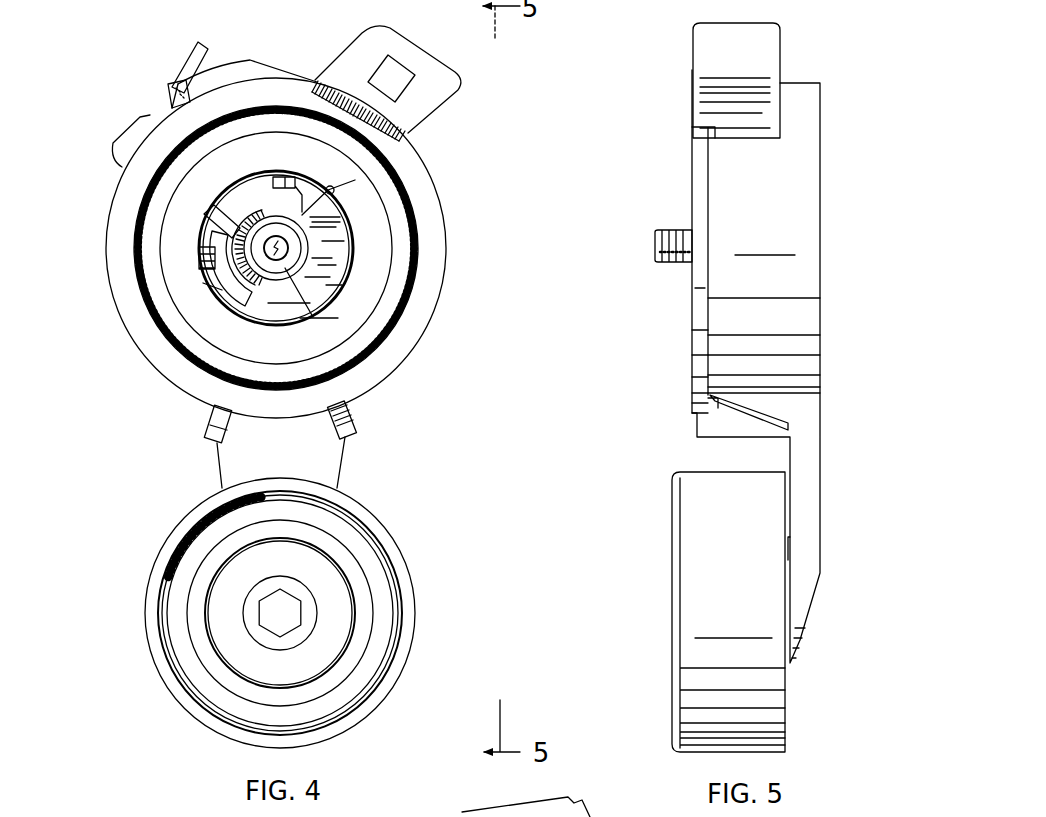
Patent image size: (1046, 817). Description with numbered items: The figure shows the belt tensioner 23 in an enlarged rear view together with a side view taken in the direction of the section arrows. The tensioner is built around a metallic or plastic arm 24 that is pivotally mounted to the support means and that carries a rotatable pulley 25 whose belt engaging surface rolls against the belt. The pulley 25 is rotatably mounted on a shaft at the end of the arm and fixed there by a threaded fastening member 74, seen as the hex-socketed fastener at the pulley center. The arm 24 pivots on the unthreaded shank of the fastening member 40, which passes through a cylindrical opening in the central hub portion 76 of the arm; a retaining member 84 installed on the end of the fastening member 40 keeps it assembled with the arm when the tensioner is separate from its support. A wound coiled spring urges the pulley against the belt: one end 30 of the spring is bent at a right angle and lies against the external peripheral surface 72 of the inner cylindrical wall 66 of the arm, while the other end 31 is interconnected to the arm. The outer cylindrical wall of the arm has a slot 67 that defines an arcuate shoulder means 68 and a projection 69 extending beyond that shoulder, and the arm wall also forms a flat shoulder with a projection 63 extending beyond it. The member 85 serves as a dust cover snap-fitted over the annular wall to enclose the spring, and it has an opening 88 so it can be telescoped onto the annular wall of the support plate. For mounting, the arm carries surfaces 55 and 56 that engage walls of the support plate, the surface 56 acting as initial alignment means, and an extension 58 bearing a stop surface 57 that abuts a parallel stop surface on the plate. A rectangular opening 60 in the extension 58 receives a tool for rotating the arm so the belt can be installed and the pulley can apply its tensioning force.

In FIG. 4, the belt tensioner 23 is at (460, 233).
In FIG. 5, the belt tensioner 23 is at (842, 194).
In FIG. 5, the arm 24 is at (813, 362).
In FIG. 4, the pulley 25 is at (405, 556).
In FIG. 5, the pulley 25 is at (698, 538).
In FIG. 4, the end of the spring 30 is at (225, 208).
In FIG. 4, the other end of the spring 31 is at (197, 54).
In FIG. 4, the fastening member 40 is at (290, 249).
In FIG. 5, the fastening member 40 is at (658, 266).
In FIG. 4, the surface on the arm 55 is at (353, 421).
In FIG. 5, the surface on the arm 55 is at (810, 412).
In FIG. 4, the surface on the arm 56 is at (205, 420).
In FIG. 4, the stop surface 57 is at (446, 100).
In FIG. 4, the extension 58 is at (432, 46).
In FIG. 5, the extension 58 is at (763, 47).
In FIG. 4, the rectangular opening 60 is at (378, 62).
In FIG. 4, the projection 63 is at (238, 222).
In FIG. 4, the inner cylindrical wall 66 is at (213, 288).
In FIG. 4, the slot 67 is at (158, 110).
In FIG. 4, the arcuate shoulder means 68 is at (165, 78).
In FIG. 4, the projection 69 is at (166, 97).
In FIG. 4, the external peripheral surface 72 is at (222, 312).
In FIG. 4, the threaded fastening member 74 is at (265, 612).
In FIG. 4, the central hub portion 76 is at (306, 232).
In FIG. 4, the retaining member 84 is at (316, 320).
In FIG. 4, the member 85 is at (125, 281).
In FIG. 5, the member 85 is at (700, 339).
In FIG. 4, the opening 88 is at (323, 192).